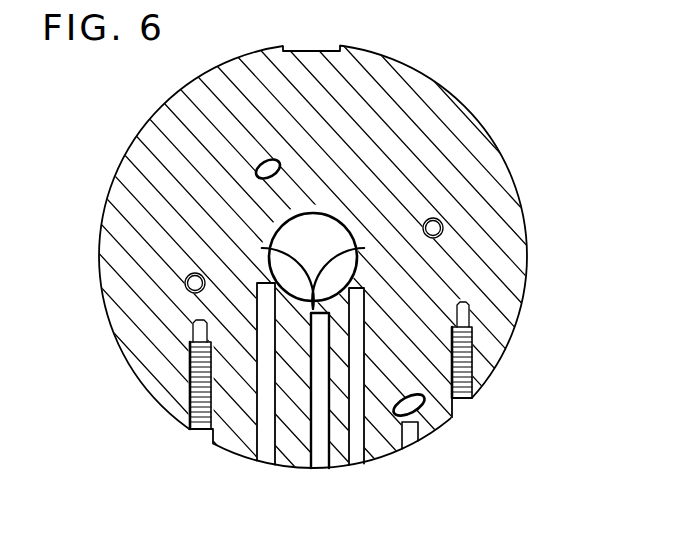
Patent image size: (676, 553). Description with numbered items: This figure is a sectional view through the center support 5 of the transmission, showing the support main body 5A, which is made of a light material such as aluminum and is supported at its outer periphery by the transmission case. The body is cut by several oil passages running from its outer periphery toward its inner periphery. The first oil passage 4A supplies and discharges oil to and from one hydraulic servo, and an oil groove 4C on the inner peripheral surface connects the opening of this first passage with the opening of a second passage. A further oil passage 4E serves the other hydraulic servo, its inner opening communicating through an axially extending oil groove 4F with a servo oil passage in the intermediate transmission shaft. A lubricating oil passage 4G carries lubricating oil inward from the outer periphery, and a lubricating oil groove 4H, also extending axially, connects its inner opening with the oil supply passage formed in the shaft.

The center support 5 is at (467, 90).
The support main body 5A is at (448, 180).
The oil groove 4F is at (253, 258).
The oil groove 4C is at (293, 307).
The lubricating oil groove 4H is at (365, 262).
The oil passage 4E is at (270, 413).
The first oil passage 4A is at (323, 427).
The lubricating oil passage 4G is at (362, 420).